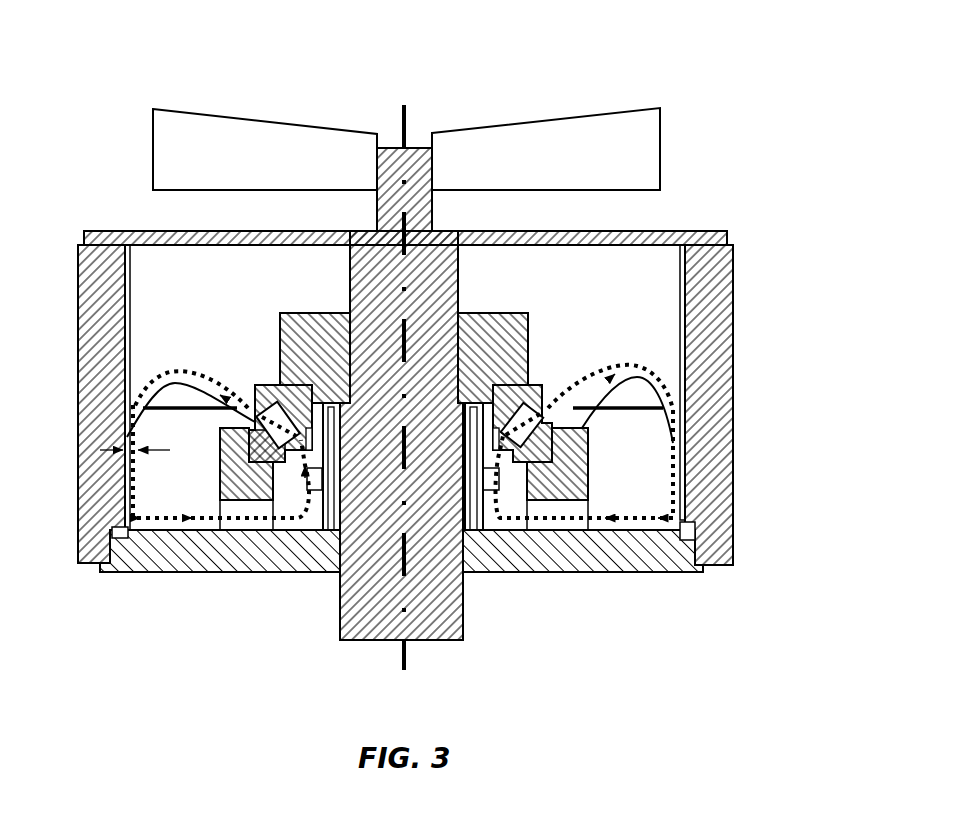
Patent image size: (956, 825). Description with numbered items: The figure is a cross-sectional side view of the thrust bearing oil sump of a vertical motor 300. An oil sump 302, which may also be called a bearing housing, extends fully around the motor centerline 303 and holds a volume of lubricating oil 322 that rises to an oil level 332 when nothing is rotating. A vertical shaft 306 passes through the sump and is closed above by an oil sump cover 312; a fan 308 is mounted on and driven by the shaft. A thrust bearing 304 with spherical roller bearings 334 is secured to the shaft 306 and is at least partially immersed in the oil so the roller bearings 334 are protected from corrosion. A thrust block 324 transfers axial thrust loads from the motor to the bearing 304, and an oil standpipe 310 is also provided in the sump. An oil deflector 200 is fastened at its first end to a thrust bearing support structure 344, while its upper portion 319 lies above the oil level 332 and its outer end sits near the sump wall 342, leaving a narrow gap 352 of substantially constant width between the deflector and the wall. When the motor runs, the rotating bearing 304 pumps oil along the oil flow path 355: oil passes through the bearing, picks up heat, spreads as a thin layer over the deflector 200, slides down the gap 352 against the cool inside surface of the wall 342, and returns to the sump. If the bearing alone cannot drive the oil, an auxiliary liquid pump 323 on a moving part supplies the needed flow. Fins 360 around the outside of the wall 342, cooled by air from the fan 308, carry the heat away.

The vertical motor 300 is at (460, 97).
The motor centerline 303 is at (406, 115).
The fan 308 is at (660, 136).
The oil sump cover 312 is at (657, 231).
The vertical shaft 306 is at (347, 288).
The thrust bearing 304 is at (412, 333).
The thrust block 324 is at (278, 338).
The roller bearings 334 is at (286, 408).
The wall 342 is at (126, 315).
The fins 360 is at (78, 540).
The oil flow path 355 is at (172, 375).
The upper portion 319 is at (172, 390).
The oil level 332 is at (189, 412).
The oil deflector 200 is at (623, 390).
The lubricating oil 322 is at (633, 469).
The oil sump 302 is at (620, 572).
The thrust bearing support structure 344 is at (572, 463).
The auxiliary liquid pump 323 is at (491, 490).
The oil standpipe 310 is at (327, 515).
The gap 352 is at (143, 462).